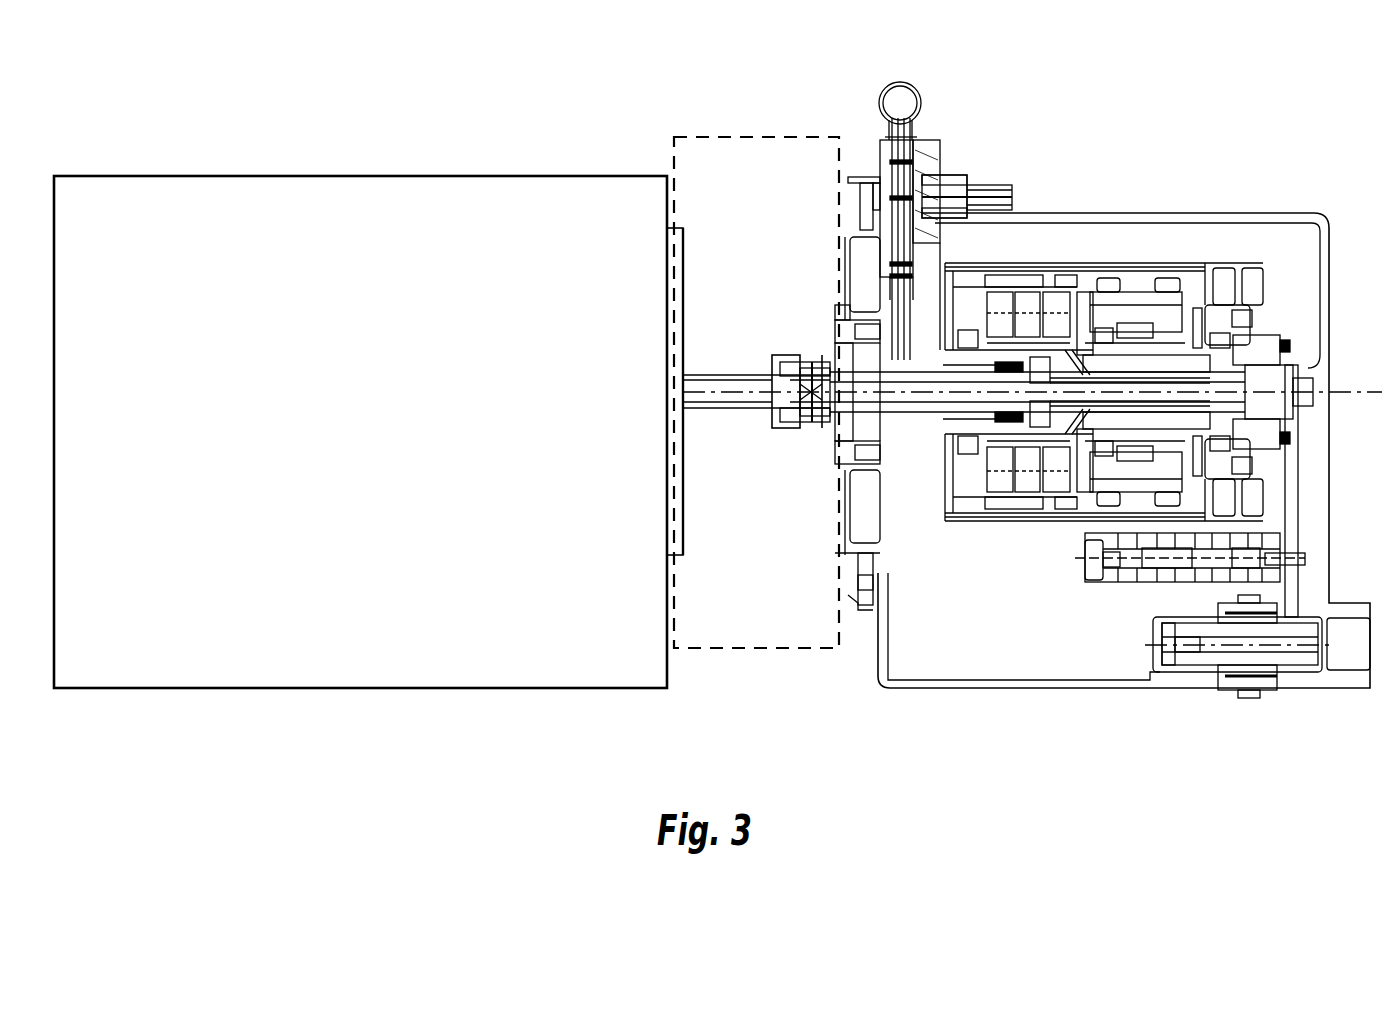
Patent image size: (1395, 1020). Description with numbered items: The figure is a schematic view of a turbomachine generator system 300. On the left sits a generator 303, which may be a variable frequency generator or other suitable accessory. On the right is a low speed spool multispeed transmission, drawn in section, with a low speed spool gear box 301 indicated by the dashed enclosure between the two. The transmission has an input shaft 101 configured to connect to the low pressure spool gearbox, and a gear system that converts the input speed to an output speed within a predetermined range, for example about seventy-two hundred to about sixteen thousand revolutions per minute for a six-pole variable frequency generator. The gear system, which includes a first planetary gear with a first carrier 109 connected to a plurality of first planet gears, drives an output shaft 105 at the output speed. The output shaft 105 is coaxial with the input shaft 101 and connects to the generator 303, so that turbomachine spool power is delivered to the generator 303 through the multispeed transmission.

The turbomachine generator system 300 is at (276, 41).
The generator 303 is at (515, 176).
The low speed spool gear box 301 is at (729, 137).
The output shaft 105 is at (738, 375).
The input shaft 101 is at (785, 355).
The first carrier 109 is at (1055, 710).